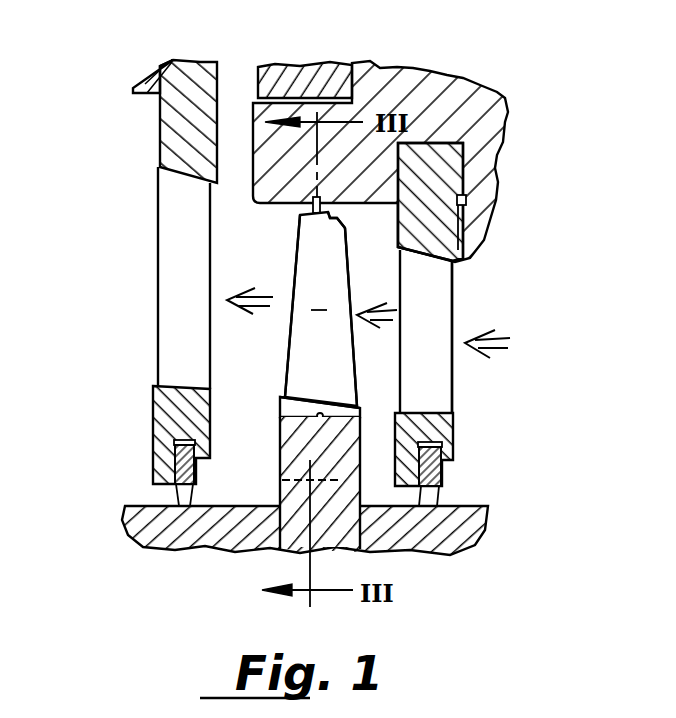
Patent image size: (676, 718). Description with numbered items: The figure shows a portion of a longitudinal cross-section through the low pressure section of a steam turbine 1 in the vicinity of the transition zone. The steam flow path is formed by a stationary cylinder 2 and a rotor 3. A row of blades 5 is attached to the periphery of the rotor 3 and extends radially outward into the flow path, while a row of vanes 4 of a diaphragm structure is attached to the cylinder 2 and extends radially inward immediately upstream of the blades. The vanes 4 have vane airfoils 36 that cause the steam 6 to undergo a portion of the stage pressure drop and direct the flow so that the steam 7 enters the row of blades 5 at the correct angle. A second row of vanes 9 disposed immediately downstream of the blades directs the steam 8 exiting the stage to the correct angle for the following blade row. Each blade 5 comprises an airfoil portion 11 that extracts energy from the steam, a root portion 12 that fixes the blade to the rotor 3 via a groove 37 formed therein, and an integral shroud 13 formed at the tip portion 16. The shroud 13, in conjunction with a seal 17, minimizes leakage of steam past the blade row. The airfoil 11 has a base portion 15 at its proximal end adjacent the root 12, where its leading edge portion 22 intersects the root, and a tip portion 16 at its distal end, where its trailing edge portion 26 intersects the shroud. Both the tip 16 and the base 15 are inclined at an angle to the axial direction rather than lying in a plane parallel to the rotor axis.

The steam turbine 1 is at (122, 135).
The stationary cylinder 2 is at (468, 78).
The rotor 3 is at (488, 506).
The vanes 4 is at (512, 426).
The blade 5 is at (345, 275).
The steam 6 is at (503, 335).
The steam 7 is at (397, 305).
The steam 8 is at (258, 297).
The second row of vanes 9 is at (157, 248).
The airfoil portion 11 is at (319, 297).
The root portion 12 is at (278, 449).
The shroud 13 is at (357, 205).
The base portion 15 is at (360, 393).
The tip portion 16 is at (345, 230).
The seal 17 is at (310, 213).
The leading edge portion 22 is at (357, 342).
The trailing edge portion 26 is at (288, 333).
The vane airfoils 36 is at (528, 382).
The groove 37 is at (305, 478).